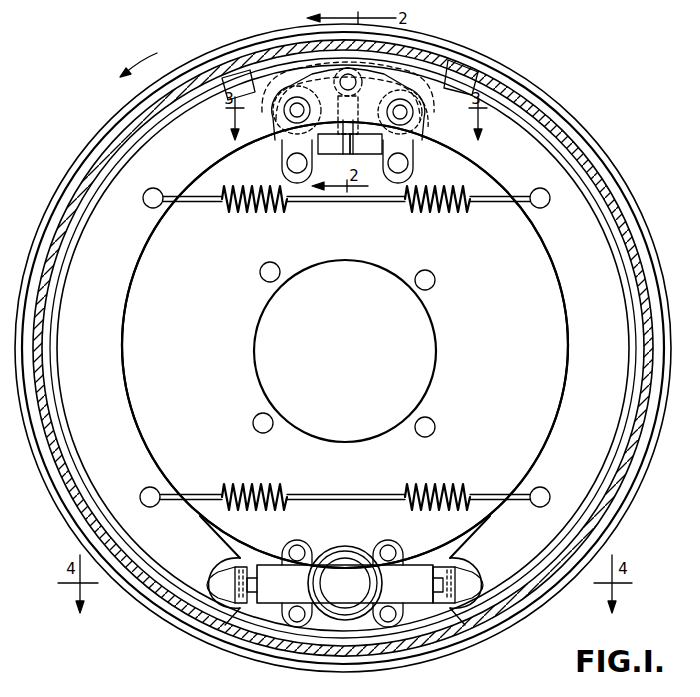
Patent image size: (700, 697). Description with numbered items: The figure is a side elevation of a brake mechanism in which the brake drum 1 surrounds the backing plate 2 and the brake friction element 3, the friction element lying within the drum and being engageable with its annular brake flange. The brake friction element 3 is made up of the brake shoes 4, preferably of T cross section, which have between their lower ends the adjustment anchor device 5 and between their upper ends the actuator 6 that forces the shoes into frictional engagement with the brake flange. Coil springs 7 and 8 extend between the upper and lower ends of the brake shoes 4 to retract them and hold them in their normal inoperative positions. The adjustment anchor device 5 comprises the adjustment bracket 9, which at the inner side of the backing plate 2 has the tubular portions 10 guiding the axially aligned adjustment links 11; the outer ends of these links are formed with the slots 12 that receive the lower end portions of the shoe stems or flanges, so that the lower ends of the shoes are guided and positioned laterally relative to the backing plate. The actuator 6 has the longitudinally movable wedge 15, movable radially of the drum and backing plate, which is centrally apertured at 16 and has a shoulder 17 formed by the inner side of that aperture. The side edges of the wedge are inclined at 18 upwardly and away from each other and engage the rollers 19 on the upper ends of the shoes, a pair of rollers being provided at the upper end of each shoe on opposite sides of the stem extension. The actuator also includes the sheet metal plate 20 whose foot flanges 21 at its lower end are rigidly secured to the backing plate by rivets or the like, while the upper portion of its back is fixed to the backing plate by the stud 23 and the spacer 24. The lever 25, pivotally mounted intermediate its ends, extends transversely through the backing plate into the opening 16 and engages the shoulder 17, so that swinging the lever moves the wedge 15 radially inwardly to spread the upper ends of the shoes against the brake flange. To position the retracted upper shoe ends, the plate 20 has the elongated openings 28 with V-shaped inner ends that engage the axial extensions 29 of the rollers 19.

The brake drum 1 is at (562, 124).
The backing plate 2 is at (533, 291).
The brake friction element 3 is at (566, 314).
The brake shoes 4 is at (112, 262).
The adjustment anchor device 5 is at (338, 577).
The actuator 6 is at (282, 143).
The coil spring 7 is at (243, 212).
The coil spring 8 is at (237, 483).
The adjustment bracket 9 is at (369, 552).
The tubular portions 10 is at (272, 575).
The adjustment links 11 is at (252, 596).
The slots 12 is at (241, 594).
The wedge 15 is at (418, 79).
The aperture 16 is at (334, 145).
The shoulder 17 is at (366, 145).
The inclined side edges 18 is at (286, 76).
The rollers 19 is at (351, 101).
The sheet metal plate 20 is at (346, 191).
The foot flanges 21 is at (297, 175).
The stud 23 is at (354, 80).
The spacer 24 is at (306, 76).
The lever 25 is at (424, 112).
The elongated openings 28 is at (289, 116).
The axial extensions 29 is at (290, 106).